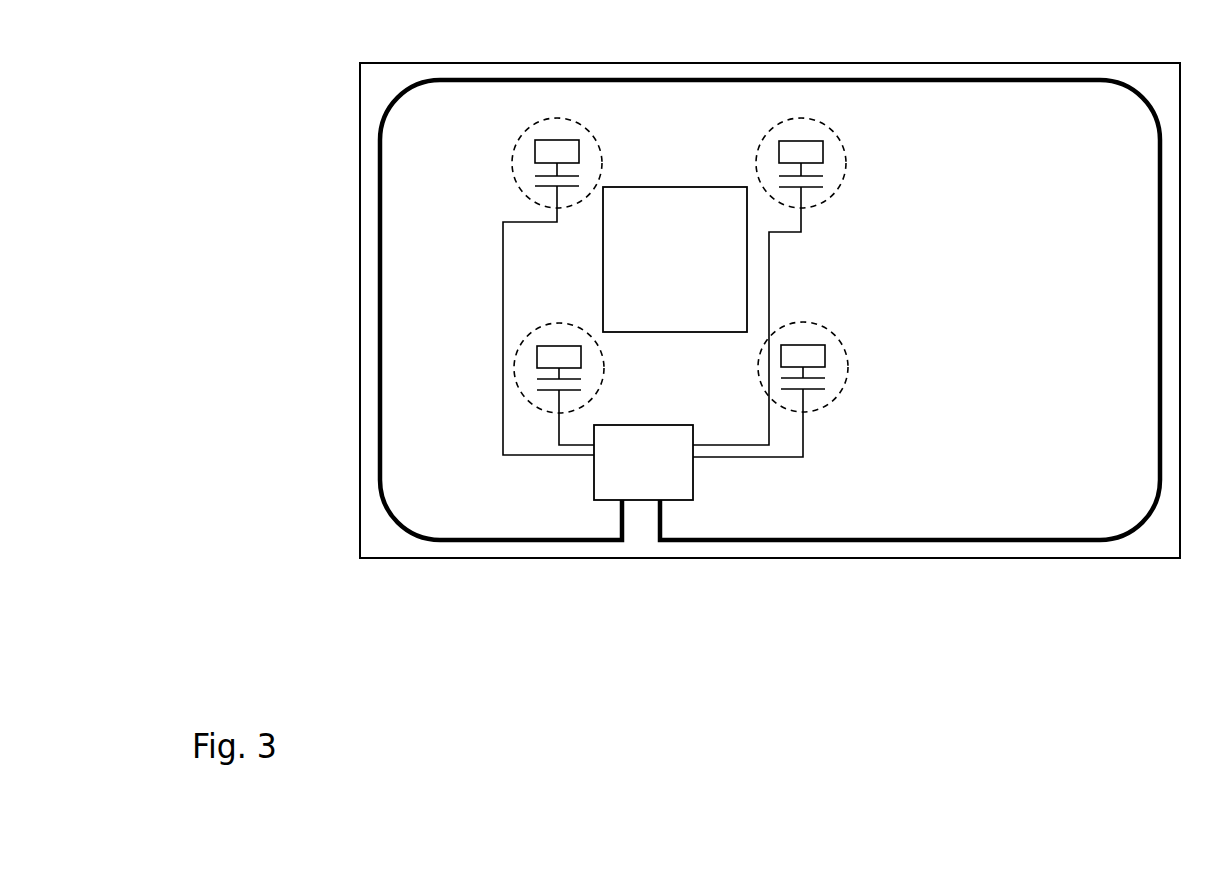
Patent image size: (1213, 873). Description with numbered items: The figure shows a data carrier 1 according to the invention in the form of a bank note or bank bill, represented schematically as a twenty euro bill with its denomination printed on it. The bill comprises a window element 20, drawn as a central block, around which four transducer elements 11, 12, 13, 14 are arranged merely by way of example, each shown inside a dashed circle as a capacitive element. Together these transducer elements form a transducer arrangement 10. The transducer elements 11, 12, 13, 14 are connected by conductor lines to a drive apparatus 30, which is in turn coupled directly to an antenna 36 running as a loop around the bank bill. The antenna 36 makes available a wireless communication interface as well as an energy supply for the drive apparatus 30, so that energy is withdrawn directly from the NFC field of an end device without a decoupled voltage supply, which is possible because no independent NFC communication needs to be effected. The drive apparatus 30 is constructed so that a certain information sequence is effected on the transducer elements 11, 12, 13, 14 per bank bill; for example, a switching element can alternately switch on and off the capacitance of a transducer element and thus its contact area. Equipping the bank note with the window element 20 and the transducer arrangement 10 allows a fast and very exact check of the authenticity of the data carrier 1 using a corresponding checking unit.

The data carrier 1 is at (600, 63).
The transducer arrangement 10 is at (467, 185).
The transducer element 11 is at (602, 153).
The transducer element 12 is at (847, 153).
The transducer element 13 is at (847, 357).
The transducer element 14 is at (515, 357).
The window element 20 is at (602, 265).
The drive apparatus 30 is at (640, 500).
The antenna 36 is at (392, 503).